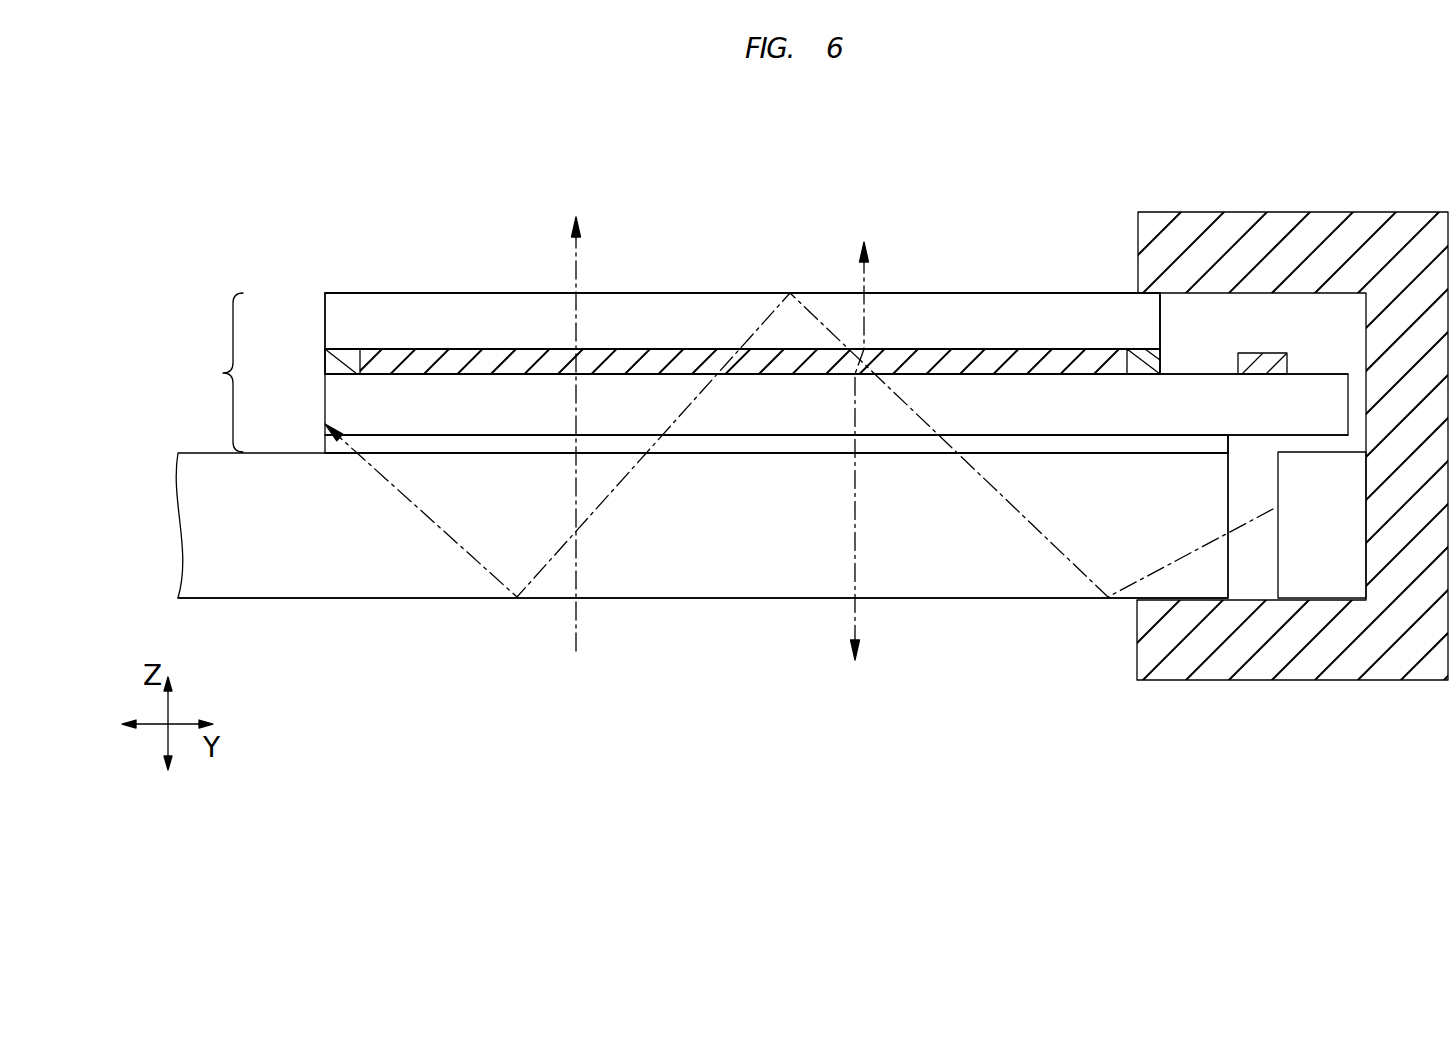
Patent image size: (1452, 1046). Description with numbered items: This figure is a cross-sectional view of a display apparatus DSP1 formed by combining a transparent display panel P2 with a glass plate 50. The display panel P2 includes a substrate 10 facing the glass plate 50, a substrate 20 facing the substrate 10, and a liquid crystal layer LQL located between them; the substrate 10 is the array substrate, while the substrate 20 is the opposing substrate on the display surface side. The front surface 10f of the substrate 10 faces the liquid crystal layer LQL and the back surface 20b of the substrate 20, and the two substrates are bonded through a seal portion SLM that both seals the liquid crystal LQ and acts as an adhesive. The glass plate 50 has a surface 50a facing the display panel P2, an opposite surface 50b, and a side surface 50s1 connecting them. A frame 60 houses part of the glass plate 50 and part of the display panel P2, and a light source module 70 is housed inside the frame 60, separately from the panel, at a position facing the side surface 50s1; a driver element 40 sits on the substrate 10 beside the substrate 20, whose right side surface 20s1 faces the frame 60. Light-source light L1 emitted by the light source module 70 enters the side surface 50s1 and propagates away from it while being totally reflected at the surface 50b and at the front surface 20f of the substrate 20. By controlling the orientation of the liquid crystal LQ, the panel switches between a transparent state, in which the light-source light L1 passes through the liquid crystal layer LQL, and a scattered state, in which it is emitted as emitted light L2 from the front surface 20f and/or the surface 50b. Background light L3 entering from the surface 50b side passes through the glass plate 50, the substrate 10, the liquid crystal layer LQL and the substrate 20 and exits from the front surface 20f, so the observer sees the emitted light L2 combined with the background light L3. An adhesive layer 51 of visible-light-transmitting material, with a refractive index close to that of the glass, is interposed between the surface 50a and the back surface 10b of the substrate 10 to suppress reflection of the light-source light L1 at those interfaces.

The display apparatus DSP1 is at (460, 186).
The display panel P2 is at (212, 372).
The substrate 20 is at (348, 312).
The front surface 20f is at (619, 290).
The back surface 20b is at (774, 353).
The side surface of second substrate 20s1 is at (1176, 308).
The seal portion SLM is at (325, 358).
The liquid crystal layer LQL is at (528, 375).
The liquid crystal LQ is at (742, 361).
The substrate 10 is at (355, 407).
The front surface 10f is at (666, 378).
The back surface 10b is at (660, 450).
The adhesive layer 51 is at (408, 447).
The glass plate 50 is at (277, 585).
The surface 50a is at (880, 450).
The surface 50b is at (1062, 612).
The side surface 50s1 is at (1248, 572).
The driver chip 40 is at (1264, 353).
The frame 60 is at (1347, 230).
The light source module 70 is at (1340, 565).
The light-source light L1 is at (1163, 565).
The emitted light L2 is at (865, 305).
The background light L3 is at (577, 275).